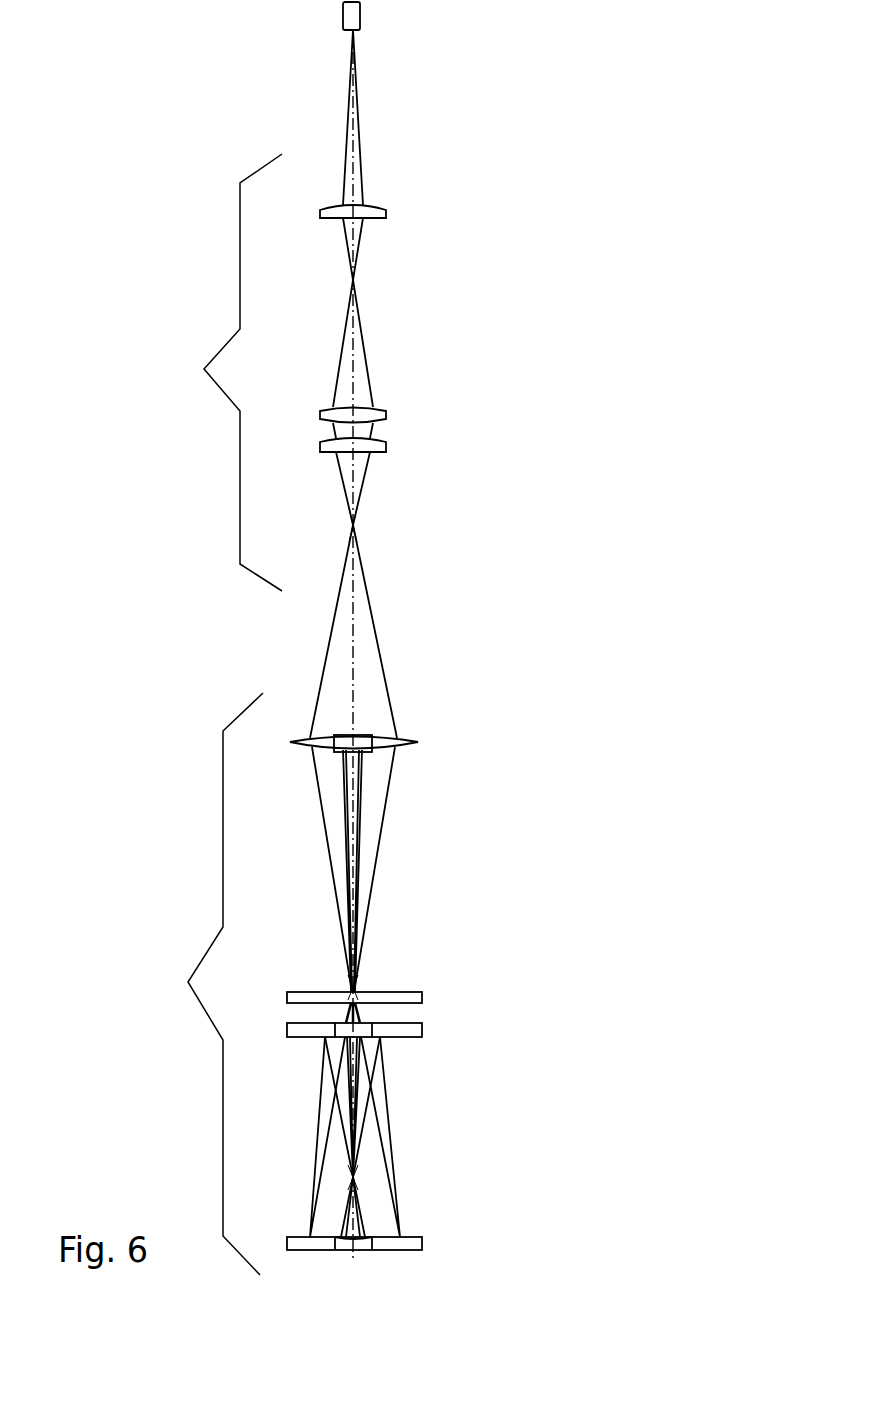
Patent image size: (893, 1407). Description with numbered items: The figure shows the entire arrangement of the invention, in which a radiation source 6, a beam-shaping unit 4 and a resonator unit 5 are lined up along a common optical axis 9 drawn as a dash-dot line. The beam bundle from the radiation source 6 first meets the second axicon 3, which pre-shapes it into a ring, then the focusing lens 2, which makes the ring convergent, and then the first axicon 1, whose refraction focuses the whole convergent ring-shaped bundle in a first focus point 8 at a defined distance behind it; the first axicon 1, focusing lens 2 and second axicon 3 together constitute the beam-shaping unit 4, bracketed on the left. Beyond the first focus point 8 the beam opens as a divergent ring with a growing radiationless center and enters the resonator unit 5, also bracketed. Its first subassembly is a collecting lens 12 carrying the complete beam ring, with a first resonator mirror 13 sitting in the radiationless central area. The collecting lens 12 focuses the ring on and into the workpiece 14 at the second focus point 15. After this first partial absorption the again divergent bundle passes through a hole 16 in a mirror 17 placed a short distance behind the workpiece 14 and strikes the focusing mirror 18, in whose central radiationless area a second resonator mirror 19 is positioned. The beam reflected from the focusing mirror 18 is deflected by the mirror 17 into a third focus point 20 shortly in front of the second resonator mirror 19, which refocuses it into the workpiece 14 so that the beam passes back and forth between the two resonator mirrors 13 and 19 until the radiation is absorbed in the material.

The first axicon 1 is at (386, 441).
The focusing lens 2 is at (386, 413).
The second axicon 3 is at (386, 211).
The beam-shaping unit 4 is at (220, 372).
The resonator unit 5 is at (204, 984).
The radiation source 6 is at (360, 12).
The first focus point 8 is at (355, 523).
The optical axis 9 is at (350, 650).
The collecting lens 12 is at (418, 742).
The first resonator mirror 13 is at (366, 742).
The workpiece 14 is at (422, 997).
The second focus point 15 is at (357, 985).
The hole 16 is at (375, 1030).
The mirror 17 is at (422, 1030).
The focusing mirror 18 is at (423, 1243).
The second resonator mirror 19 is at (370, 1238).
The third focus point 20 is at (355, 1187).